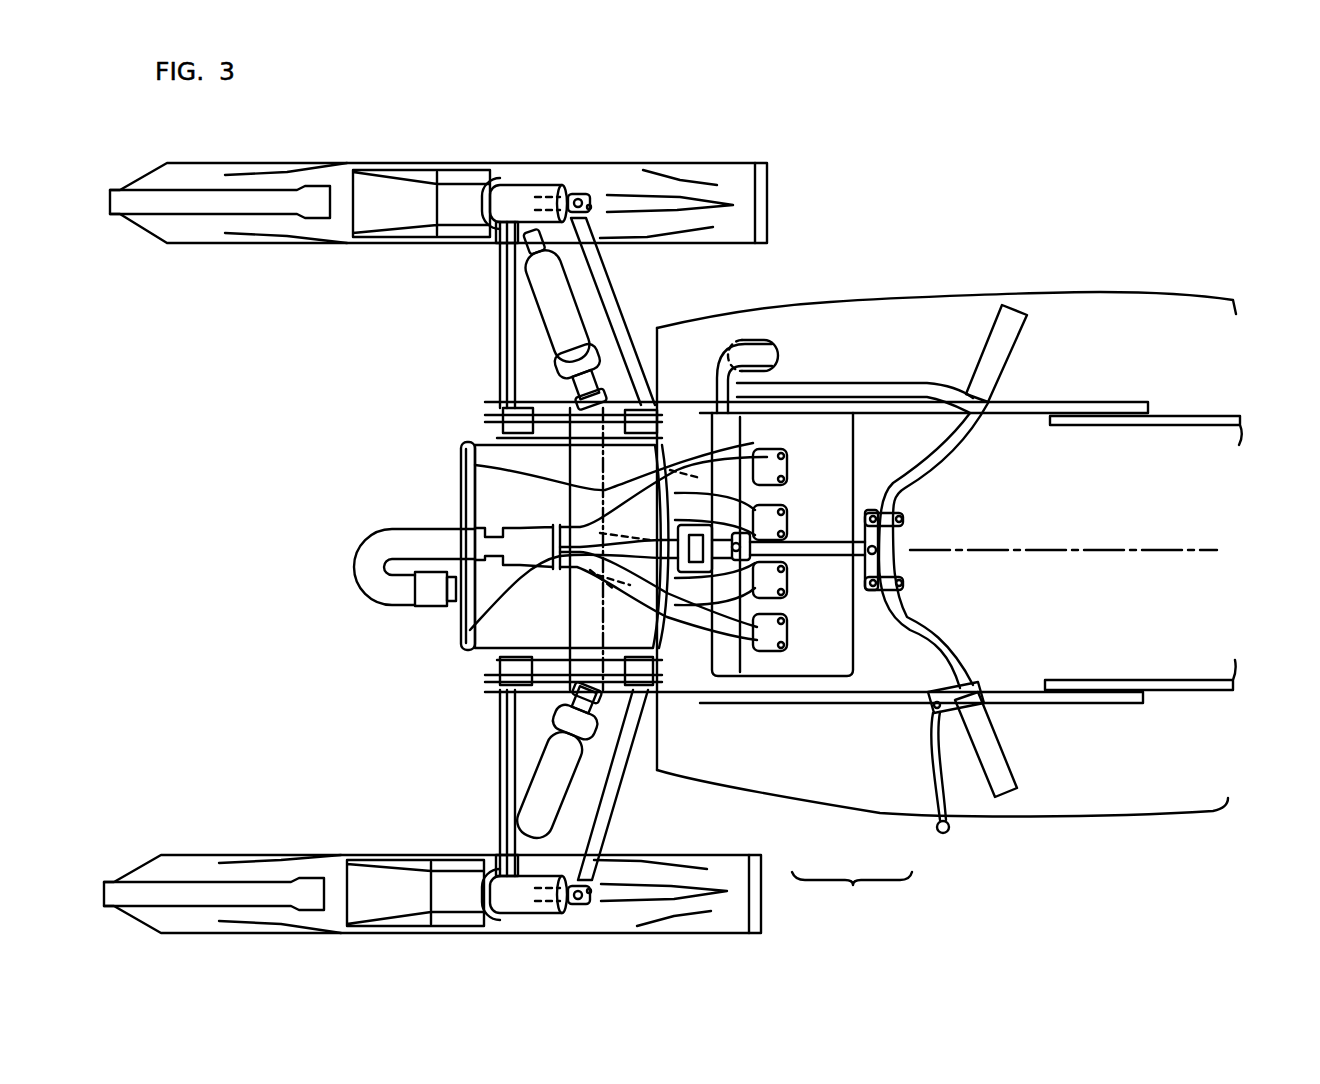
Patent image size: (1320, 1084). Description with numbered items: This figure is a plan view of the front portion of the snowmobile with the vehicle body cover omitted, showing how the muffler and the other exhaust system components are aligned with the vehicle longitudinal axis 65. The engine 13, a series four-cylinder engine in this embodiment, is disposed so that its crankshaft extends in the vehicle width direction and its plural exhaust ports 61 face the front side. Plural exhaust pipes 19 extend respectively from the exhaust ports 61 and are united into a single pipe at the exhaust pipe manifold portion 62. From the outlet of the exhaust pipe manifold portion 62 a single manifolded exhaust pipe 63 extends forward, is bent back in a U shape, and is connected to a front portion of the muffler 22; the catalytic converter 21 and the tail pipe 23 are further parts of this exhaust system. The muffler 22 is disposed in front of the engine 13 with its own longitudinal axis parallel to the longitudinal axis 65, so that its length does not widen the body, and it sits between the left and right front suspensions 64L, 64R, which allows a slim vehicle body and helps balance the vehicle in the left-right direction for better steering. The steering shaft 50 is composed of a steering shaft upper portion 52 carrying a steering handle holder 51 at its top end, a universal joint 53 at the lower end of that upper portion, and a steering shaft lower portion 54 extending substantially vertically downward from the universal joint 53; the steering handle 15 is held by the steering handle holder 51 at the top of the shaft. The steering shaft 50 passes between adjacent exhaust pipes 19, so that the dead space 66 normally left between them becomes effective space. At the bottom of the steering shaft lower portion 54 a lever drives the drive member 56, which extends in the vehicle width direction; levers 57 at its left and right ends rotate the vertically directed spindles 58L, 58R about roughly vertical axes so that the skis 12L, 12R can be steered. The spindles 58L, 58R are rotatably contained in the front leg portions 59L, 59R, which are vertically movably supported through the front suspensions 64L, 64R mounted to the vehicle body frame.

The ski 12R is at (244, 243).
The ski 12L is at (245, 854).
The engine 13 is at (840, 440).
The handlebar 15 is at (940, 470).
The exhaust pipe 19 is at (700, 460).
The catalytic converter 21 is at (378, 537).
The muffler 22 is at (492, 632).
The tail pipe 23 is at (719, 378).
The steering shaft 50 is at (852, 891).
The steering handle holder 51 is at (873, 632).
The steering shaft upper portion 52 is at (833, 632).
The universal joint 53 is at (812, 632).
The steering shaft lower portion 54 is at (700, 460).
The drive member 56 is at (590, 257).
The lever 57 is at (588, 206).
The spindle 58R is at (558, 203).
The spindle 58L is at (523, 903).
The front leg portion 59R is at (527, 194).
The front leg portion 59L is at (467, 901).
The exhaust port 61 is at (778, 468).
The exhaust pipe manifold portion 62 is at (460, 633).
The manifolded exhaust pipe 63 is at (422, 542).
The front suspension 64R is at (558, 323).
The front suspension 64L is at (548, 781).
The longitudinal axis 65 is at (1197, 547).
The dead space 66 is at (660, 530).